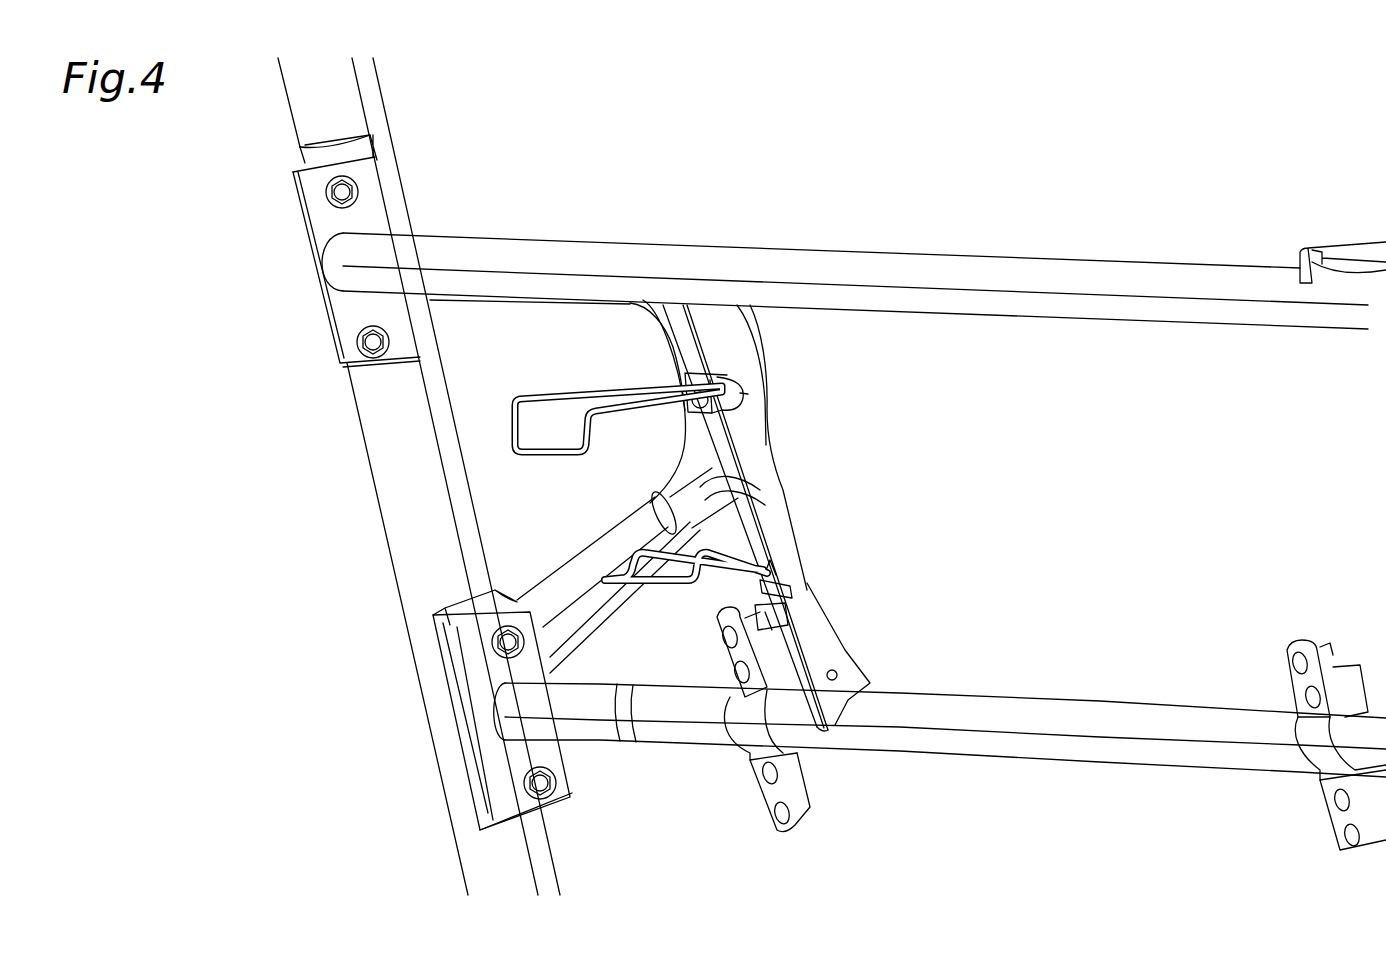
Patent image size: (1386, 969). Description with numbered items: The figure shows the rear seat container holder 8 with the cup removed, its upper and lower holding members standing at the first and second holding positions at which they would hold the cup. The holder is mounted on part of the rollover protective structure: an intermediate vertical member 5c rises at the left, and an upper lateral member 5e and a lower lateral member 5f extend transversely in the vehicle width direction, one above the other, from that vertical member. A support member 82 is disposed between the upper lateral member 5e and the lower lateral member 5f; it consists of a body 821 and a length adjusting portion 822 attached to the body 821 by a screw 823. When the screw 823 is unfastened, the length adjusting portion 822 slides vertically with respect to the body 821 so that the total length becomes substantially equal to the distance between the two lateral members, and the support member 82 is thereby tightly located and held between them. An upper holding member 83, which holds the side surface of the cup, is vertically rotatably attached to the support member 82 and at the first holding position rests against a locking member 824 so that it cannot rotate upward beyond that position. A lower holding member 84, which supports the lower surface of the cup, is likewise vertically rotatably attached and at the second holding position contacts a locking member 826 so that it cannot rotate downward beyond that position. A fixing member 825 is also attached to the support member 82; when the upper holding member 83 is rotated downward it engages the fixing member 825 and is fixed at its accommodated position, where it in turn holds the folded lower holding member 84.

The intermediate vertical member 5c is at (335, 104).
The upper lateral member 5e is at (845, 263).
The lower lateral member 5f is at (1018, 725).
The container holder 8 is at (600, 328).
The support member 82 is at (708, 330).
The body 821 is at (765, 470).
The length adjusting portion 822 is at (848, 687).
The screw 823 is at (815, 718).
The locking member 824 is at (727, 377).
The fixing member 825 is at (788, 620).
The locking member 826 is at (790, 588).
The upper holding member 83 is at (540, 393).
The lower holding member 84 is at (665, 600).